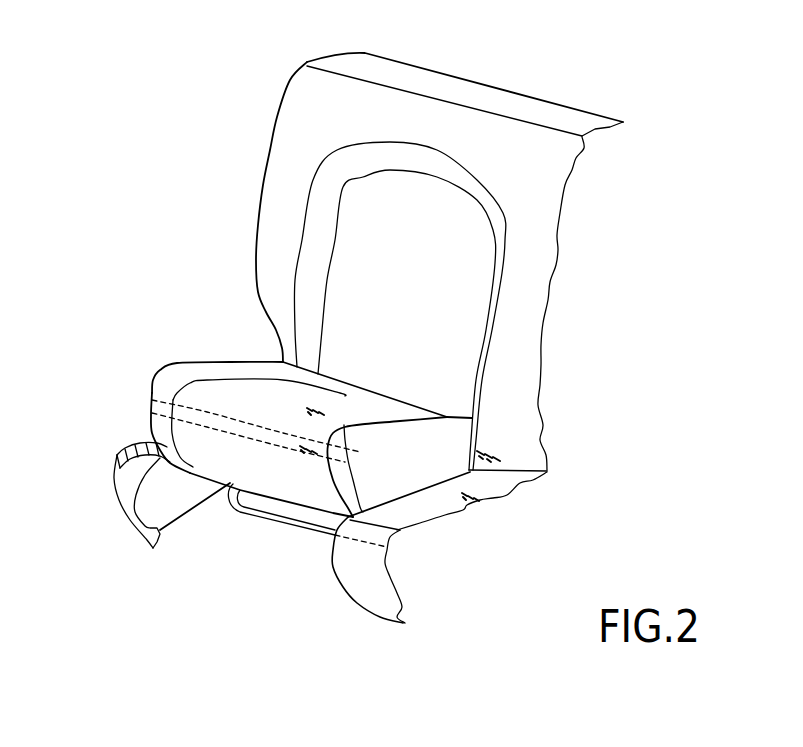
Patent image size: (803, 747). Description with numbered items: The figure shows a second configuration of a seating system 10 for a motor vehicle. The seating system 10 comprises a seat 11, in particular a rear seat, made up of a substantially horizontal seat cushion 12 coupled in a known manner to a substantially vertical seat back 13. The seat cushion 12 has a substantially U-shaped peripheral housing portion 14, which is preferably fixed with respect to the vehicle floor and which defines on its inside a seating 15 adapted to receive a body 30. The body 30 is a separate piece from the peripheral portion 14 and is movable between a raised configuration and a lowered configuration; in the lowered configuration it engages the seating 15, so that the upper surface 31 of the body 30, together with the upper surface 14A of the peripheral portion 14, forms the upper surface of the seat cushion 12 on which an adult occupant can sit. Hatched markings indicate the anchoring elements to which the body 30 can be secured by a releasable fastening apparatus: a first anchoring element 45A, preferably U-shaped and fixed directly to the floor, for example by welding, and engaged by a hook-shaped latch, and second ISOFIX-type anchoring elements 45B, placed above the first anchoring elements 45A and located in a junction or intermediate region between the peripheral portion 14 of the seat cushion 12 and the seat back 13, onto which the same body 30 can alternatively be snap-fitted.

The seating system 10 is at (233, 107).
The seat 11 is at (472, 78).
The seat cushion 12 is at (125, 480).
The seat back 13 is at (272, 163).
The peripheral housing portion 14 is at (139, 444).
The upper surface of the peripheral portion 14A is at (166, 463).
The seating 15 is at (333, 570).
The body 30 is at (262, 522).
The upper surface of the body 31 is at (245, 390).
The first anchoring element 45A is at (467, 503).
The second anchoring element 45B is at (353, 422).